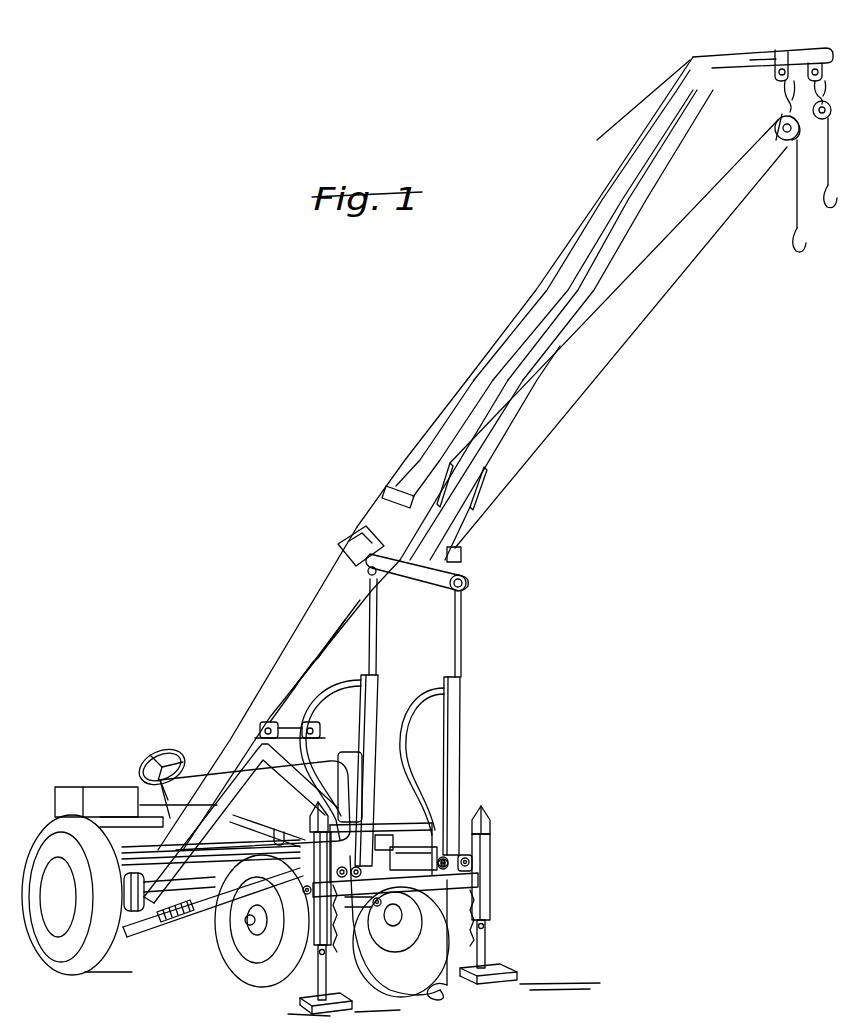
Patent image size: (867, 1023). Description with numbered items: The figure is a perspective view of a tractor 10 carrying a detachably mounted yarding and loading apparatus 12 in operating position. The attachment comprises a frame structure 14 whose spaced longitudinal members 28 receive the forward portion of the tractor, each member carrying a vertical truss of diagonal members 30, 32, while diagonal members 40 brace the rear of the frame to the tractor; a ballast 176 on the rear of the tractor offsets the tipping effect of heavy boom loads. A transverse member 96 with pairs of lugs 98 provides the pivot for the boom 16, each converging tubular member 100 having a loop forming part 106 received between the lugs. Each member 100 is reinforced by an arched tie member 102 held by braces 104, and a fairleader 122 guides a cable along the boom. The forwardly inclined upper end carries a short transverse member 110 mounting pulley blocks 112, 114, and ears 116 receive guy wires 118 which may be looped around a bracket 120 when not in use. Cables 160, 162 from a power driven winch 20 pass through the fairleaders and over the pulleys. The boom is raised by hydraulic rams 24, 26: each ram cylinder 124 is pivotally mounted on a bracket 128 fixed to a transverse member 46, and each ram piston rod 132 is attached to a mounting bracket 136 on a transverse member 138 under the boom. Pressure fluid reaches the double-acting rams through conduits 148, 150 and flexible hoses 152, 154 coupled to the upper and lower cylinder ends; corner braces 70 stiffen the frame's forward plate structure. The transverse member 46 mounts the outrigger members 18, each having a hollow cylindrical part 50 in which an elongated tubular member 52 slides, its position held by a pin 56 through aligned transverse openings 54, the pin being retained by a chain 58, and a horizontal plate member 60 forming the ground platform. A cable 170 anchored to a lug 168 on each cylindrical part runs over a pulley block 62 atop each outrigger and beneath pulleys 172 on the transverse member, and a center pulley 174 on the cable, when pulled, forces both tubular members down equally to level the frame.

The tractor 10 is at (206, 770).
The yarding and loading apparatus 12 is at (404, 668).
The frame structure 14 is at (258, 781).
The boom 16 is at (664, 177).
The outrigger members 18 is at (313, 925).
The power driven winch 20 is at (137, 930).
The hydraulic ram 24 is at (386, 701).
The hydraulic ram 26 is at (466, 731).
The longitudinal members 28 is at (181, 921).
The diagonal member 30 is at (232, 803).
The diagonal member 32 is at (293, 786).
The diagonal members 40 is at (163, 930).
The transverse member 46 is at (412, 908).
The hollow cylindrical part 50 is at (305, 890).
The elongated tubular member 52 is at (317, 973).
The transverse openings 54 is at (487, 933).
The pin 56 is at (314, 943).
The chain 58 is at (336, 955).
The horizontal plate member 60 is at (300, 1004).
The pulley block 62 is at (309, 827).
The corner braces 70 is at (388, 835).
The transverse member 96 is at (318, 760).
The lugs 98 is at (258, 732).
The tubular members 100 is at (627, 223).
The tie member 102 is at (508, 332).
The braces 104 is at (386, 489).
The loop forming part 106 is at (262, 721).
The transverse member 110 is at (795, 50).
The pulley block 112 is at (783, 150).
The pulley block 114 is at (813, 127).
The ears 116 is at (690, 56).
The guy wires 118 is at (649, 96).
The bracket 120 is at (311, 622).
The fairleader 122 is at (345, 545).
The ram cylinder 124 is at (378, 792).
The bracket 128 is at (450, 881).
The ram piston rod 132 is at (465, 637).
The mounting bracket 136 is at (470, 585).
The transverse member 138 is at (466, 577).
The conduit 148 is at (140, 852).
The conduit 150 is at (124, 872).
The flexible hoses 152 is at (403, 722).
The hoses 154 is at (413, 859).
The cable 160 is at (706, 201).
The cable 162 is at (690, 265).
The lug 168 is at (268, 906).
The cable 170 is at (262, 890).
The pulleys 172 is at (478, 868).
The pulley 174 is at (444, 994).
The ballast 176 is at (95, 786).